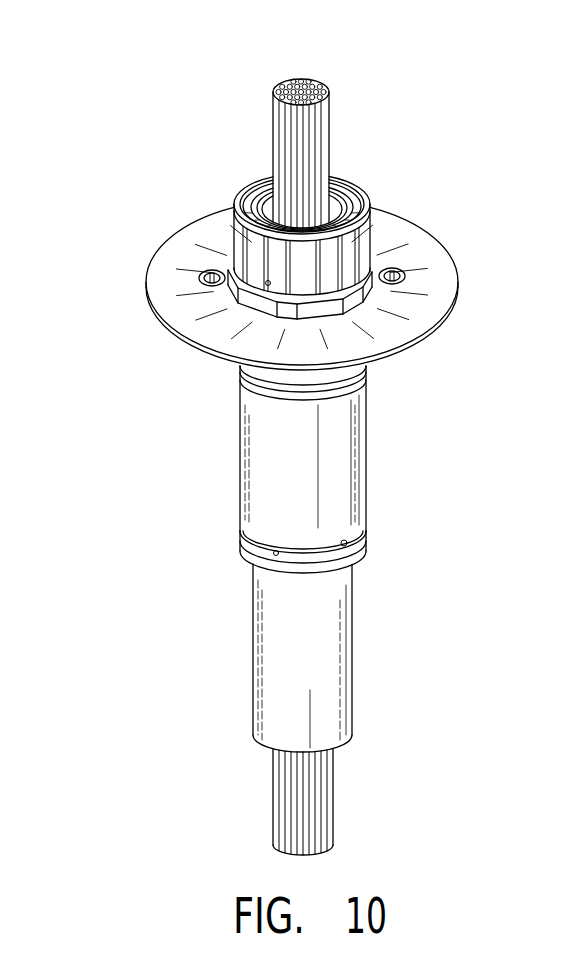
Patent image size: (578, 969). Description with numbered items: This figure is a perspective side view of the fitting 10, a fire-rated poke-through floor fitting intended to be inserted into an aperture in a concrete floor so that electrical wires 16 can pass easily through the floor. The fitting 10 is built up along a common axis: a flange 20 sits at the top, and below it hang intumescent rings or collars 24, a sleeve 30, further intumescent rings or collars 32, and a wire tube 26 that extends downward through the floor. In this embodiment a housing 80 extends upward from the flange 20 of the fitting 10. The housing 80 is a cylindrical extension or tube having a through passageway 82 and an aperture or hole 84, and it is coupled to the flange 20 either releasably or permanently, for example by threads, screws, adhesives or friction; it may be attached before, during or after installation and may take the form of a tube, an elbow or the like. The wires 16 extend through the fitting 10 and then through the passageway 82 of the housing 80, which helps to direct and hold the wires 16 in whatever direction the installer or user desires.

The fitting 10 is at (417, 152).
The electrical wires 16 is at (352, 116).
The flange 20 is at (453, 269).
The intumescent rings or collars 24 is at (378, 378).
The wire tube 26 is at (356, 679).
The sleeve 30 is at (357, 467).
The intumescent rings or collars 32 is at (381, 556).
The housing 80 is at (377, 243).
The through passageway 82 is at (256, 186).
The aperture or hole 84 is at (238, 228).